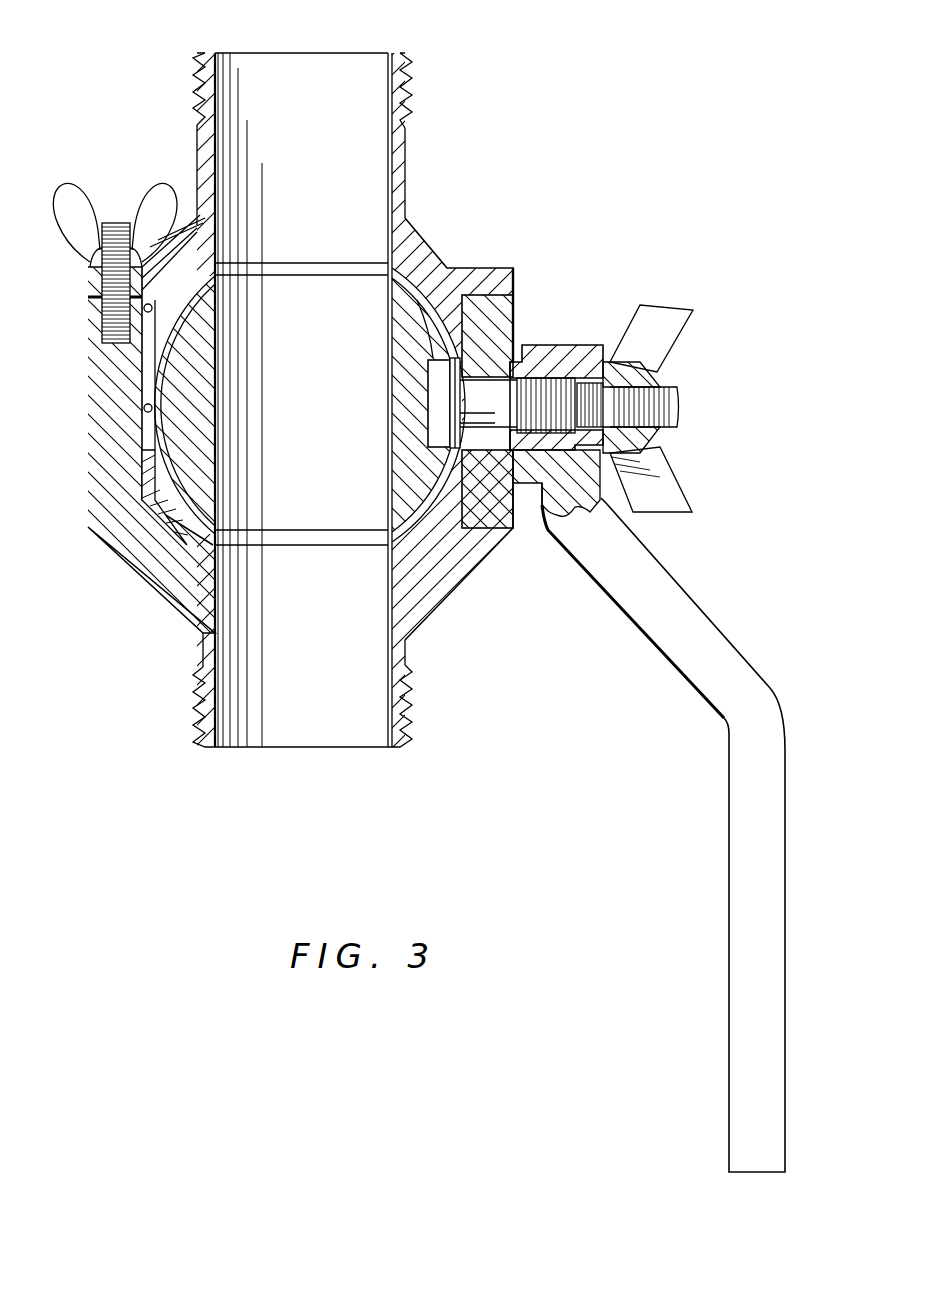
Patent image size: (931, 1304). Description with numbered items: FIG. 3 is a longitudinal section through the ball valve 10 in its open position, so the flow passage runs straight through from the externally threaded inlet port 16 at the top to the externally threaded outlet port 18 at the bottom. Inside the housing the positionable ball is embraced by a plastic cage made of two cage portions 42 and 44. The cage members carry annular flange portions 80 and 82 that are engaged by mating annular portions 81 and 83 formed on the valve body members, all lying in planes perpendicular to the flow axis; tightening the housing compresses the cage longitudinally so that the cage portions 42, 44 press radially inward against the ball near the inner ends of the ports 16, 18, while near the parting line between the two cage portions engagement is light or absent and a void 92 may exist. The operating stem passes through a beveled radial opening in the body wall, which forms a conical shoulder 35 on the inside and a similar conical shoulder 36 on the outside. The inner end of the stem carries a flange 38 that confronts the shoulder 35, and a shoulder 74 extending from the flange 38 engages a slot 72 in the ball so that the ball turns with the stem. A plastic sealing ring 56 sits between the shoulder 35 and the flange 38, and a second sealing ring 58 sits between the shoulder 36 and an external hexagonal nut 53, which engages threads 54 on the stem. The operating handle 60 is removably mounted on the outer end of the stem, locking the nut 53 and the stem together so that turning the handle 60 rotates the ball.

The ball valve 10 is at (82, 617).
The inlet port 16 is at (393, 113).
The outlet port 18 is at (372, 722).
The conical shoulder 35 is at (505, 445).
The conical shoulder 36 is at (540, 312).
The flange 38 is at (455, 405).
The cage portion 42 is at (145, 352).
The cage portion 44 is at (145, 474).
The hexagonal nut 53 is at (553, 365).
The threads 54 is at (598, 485).
The sealing ring 56 is at (480, 350).
The sealing ring 58 is at (508, 503).
The operating handle 60 is at (688, 606).
The slot 72 is at (430, 348).
The shoulder 74 is at (437, 385).
The annular flange portion 80 is at (205, 272).
The annular portion 81 is at (372, 278).
The annular flange portion 82 is at (205, 548).
The annular portion 83 is at (420, 540).
The void 92 is at (145, 410).